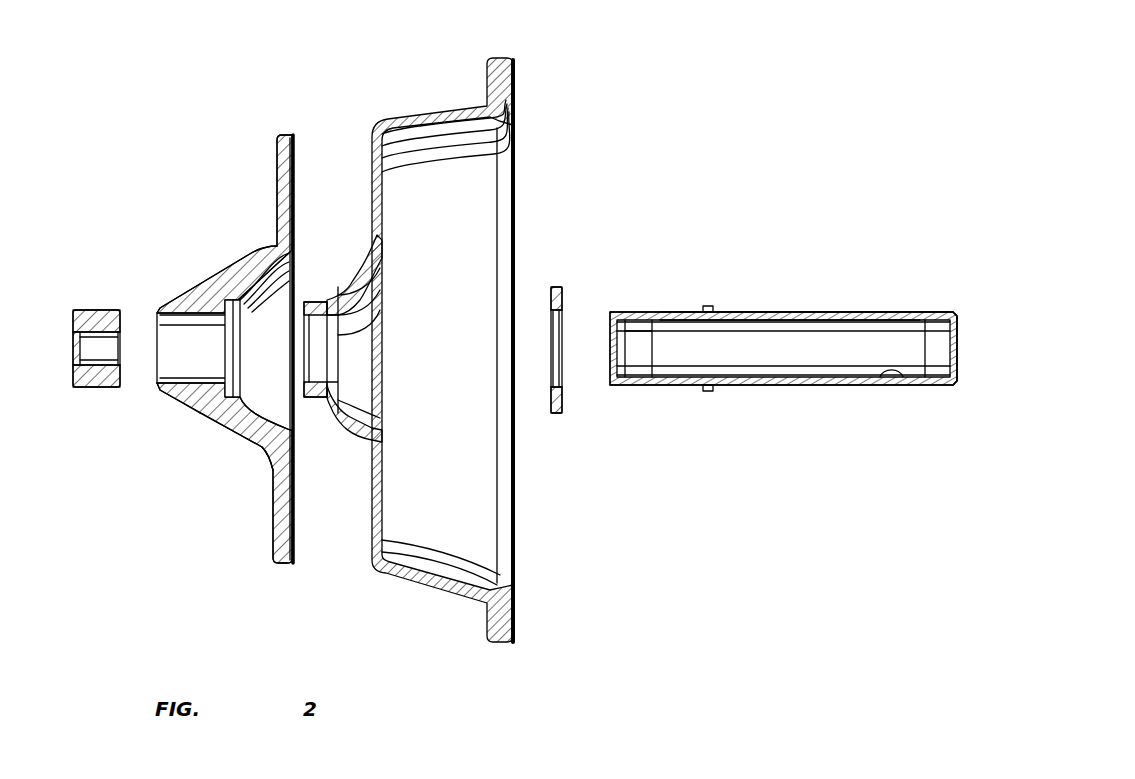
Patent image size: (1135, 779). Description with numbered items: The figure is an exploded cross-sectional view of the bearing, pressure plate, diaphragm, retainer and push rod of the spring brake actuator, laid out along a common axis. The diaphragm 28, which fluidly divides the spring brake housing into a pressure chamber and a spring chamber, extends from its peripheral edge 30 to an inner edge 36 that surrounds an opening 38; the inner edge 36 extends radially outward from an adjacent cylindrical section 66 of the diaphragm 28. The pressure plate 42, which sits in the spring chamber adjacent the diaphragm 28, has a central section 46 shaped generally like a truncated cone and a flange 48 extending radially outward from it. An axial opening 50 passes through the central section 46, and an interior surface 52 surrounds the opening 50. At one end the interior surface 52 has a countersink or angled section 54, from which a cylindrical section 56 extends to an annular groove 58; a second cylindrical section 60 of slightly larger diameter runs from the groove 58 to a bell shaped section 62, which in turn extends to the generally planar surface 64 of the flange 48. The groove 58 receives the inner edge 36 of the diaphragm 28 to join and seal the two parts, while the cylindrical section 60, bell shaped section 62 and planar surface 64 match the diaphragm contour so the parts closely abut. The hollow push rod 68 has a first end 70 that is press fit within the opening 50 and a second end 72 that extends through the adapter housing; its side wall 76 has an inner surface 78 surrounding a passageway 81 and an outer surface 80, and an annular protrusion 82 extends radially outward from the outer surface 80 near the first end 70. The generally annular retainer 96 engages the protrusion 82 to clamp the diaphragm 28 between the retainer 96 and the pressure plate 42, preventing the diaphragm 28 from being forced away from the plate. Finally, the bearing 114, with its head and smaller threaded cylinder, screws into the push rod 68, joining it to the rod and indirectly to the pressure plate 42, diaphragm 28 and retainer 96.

The diaphragm 28 is at (405, 117).
The peripheral edge 30 is at (498, 58).
The inner edge 36 is at (316, 300).
The opening 38 is at (328, 318).
The pressure plate 42 is at (183, 278).
The central section 46 is at (222, 279).
The flange 48 is at (277, 160).
The axial opening 50 is at (167, 303).
The interior surface 52 is at (183, 395).
The angled section 54 is at (157, 385).
The cylindrical section 56 is at (198, 412).
The annular groove 58 is at (233, 430).
The cylindrical section 60 is at (240, 392).
The bell shaped section 62 is at (275, 418).
The planar surface 64 is at (292, 172).
The cylindrical section 66 is at (324, 300).
The push rod 68 is at (825, 312).
The first end 70 is at (608, 304).
The second end 72 is at (958, 300).
The side wall 76 is at (897, 312).
The inner surface 78 is at (902, 386).
The outer surface 80 is at (748, 312).
The passageway 81 is at (799, 363).
The annular protrusion 82 is at (708, 305).
The retainer 96 is at (553, 288).
The bearing 114 is at (72, 313).